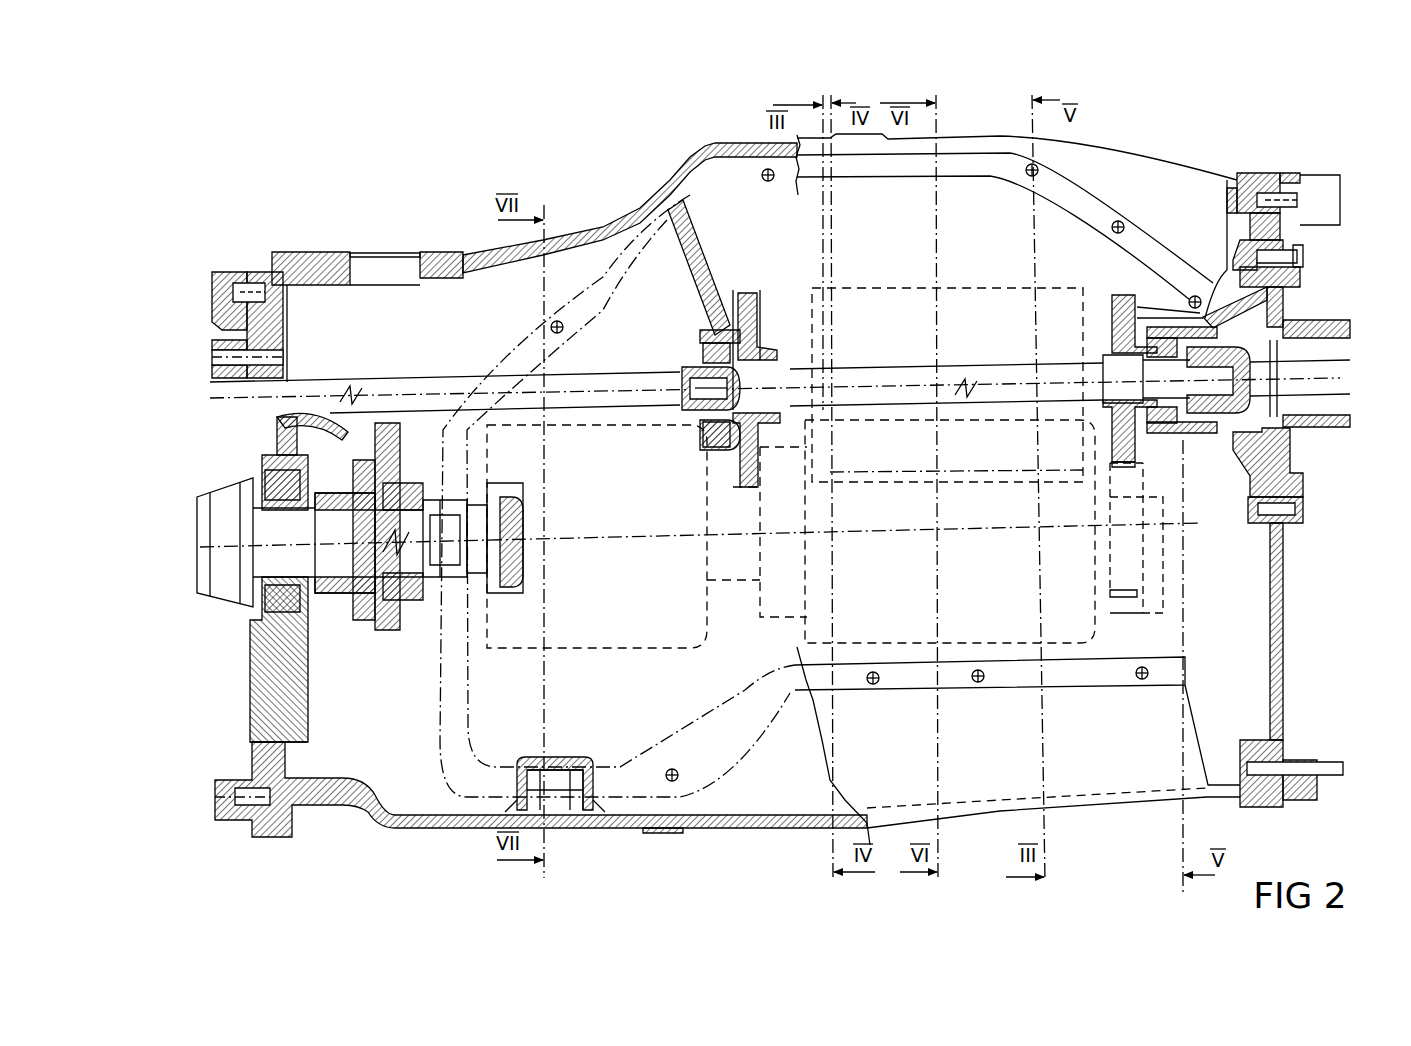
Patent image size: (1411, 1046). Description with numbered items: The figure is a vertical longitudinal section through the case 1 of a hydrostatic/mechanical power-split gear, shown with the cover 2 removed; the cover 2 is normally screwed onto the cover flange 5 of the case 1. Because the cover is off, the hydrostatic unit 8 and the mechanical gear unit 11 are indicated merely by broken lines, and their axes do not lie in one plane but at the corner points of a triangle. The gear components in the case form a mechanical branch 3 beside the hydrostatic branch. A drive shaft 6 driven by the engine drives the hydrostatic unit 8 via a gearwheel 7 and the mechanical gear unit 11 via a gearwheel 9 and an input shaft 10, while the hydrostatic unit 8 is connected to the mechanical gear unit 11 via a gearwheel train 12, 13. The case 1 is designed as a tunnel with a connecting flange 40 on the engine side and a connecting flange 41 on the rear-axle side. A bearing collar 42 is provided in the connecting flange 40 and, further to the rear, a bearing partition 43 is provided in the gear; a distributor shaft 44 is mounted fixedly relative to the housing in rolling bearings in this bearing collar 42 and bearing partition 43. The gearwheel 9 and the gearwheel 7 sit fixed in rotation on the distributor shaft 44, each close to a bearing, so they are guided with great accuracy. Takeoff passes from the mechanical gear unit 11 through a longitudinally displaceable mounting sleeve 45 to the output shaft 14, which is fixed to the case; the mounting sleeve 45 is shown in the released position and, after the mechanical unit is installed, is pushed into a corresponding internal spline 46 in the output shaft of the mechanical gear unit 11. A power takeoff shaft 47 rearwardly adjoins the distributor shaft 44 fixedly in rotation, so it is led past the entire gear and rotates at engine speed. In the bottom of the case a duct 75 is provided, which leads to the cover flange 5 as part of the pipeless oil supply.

The case 1 is at (333, 215).
The cover 2 is at (797, 240).
The mechanical branch 3 is at (797, 217).
The cover flange 5 is at (503, 360).
The drive shaft 6 is at (1263, 173).
The gearwheel 7 is at (748, 487).
The hydrostatic unit 8 is at (947, 385).
The gearwheel 9 is at (1283, 515).
The input shaft 10 is at (1128, 563).
The mechanical gear unit 11 is at (791, 534).
The gearwheel train 12 is at (1157, 542).
The gearwheel train 13 is at (1160, 440).
The output shaft 14 is at (343, 557).
The connecting flange 40 is at (1230, 187).
The connecting flange 41 is at (307, 808).
The bearing collar 42 is at (1267, 450).
The bearing partition 43 is at (703, 296).
The distributor shaft 44 is at (868, 395).
The mounting sleeve 45 is at (467, 585).
The internal spline 46 is at (503, 583).
The power takeoff shaft 47 is at (383, 387).
The duct 75 is at (562, 783).